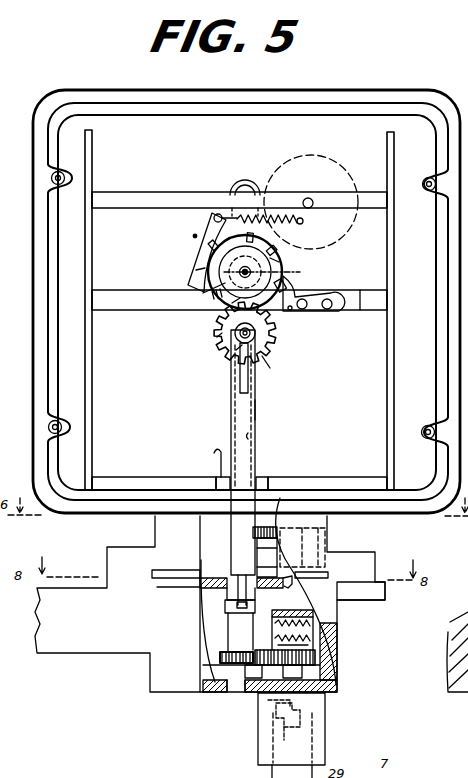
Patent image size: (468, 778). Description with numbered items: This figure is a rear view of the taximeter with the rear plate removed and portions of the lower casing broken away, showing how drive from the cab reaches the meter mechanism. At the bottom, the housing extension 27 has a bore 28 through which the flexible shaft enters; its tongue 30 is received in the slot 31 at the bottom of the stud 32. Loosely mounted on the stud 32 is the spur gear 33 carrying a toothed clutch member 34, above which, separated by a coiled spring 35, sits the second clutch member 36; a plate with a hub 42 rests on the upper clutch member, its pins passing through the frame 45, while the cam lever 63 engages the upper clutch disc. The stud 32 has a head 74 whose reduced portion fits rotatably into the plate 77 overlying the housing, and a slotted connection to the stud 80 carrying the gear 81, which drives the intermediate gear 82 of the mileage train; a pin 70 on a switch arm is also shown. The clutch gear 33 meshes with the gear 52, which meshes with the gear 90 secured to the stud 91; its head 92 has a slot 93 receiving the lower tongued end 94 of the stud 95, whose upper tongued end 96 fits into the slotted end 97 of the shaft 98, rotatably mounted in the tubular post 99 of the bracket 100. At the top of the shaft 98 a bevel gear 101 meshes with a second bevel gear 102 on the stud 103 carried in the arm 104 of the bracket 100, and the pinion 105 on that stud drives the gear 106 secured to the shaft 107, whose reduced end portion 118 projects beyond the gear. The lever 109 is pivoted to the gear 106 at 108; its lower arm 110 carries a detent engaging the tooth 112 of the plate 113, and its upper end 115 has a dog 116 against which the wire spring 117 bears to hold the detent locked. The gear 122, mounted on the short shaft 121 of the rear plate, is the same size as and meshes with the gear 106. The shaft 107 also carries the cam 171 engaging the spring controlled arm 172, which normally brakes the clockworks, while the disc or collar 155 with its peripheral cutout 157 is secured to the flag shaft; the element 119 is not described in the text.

The spring controlled arm 172 is at (222, 190).
The stud or short shaft 121 is at (308, 203).
The gear 122 is at (343, 179).
The projection or dog 116 is at (214, 220).
The upper end of lever 115 is at (278, 237).
The cutout 157 is at (190, 236).
The wire spring 117 is at (192, 250).
The reduced end portion 118 is at (200, 274).
The pivot 108 is at (284, 249).
The shaft 107 is at (297, 259).
The lever 109 is at (287, 268).
The tooth 112 is at (292, 284).
The plate 113 is at (330, 298).
The lower arm of lever 110 is at (235, 289).
The cam 171 is at (203, 293).
The gear 106 is at (232, 303).
The disc or collar 155 is at (291, 311).
The pinion 105 is at (270, 336).
The cross bar 119 is at (368, 308).
The second bevel gear 102 is at (217, 337).
The bevel gear 101 is at (263, 362).
The stud 103 is at (238, 352).
The arm 104 is at (242, 383).
The tubular post 99 is at (257, 410).
The shaft 98 is at (250, 437).
The slotted end 97 is at (246, 468).
The bracket 100 is at (215, 451).
The intermediate gear 82 is at (280, 498).
The upper tongued end 96 is at (198, 516).
The stud 95 is at (241, 537).
The gear 81 is at (322, 533).
The lower tongued end 94 is at (232, 576).
The stud 80 is at (300, 571).
The pin or projection 70 is at (313, 596).
The head 74 is at (376, 600).
The plate 77 is at (167, 585).
The head 92 is at (226, 602).
The slot 93 is at (273, 603).
The gear 52 is at (218, 655).
The stud 91 is at (227, 636).
The hub 42 is at (257, 628).
The second clutch member 36 is at (320, 627).
The toothed clutch member 34 is at (316, 636).
The spur gear 33 is at (318, 655).
The gear 90 is at (220, 662).
The frame 45 is at (320, 672).
The cam lever 63 is at (213, 683).
The coiled spring 35 is at (243, 668).
The stud 32 is at (256, 705).
The bore or opening 28 is at (277, 717).
The tongue 30 is at (262, 722).
The slot 31 is at (322, 706).
The extension 27 is at (328, 720).